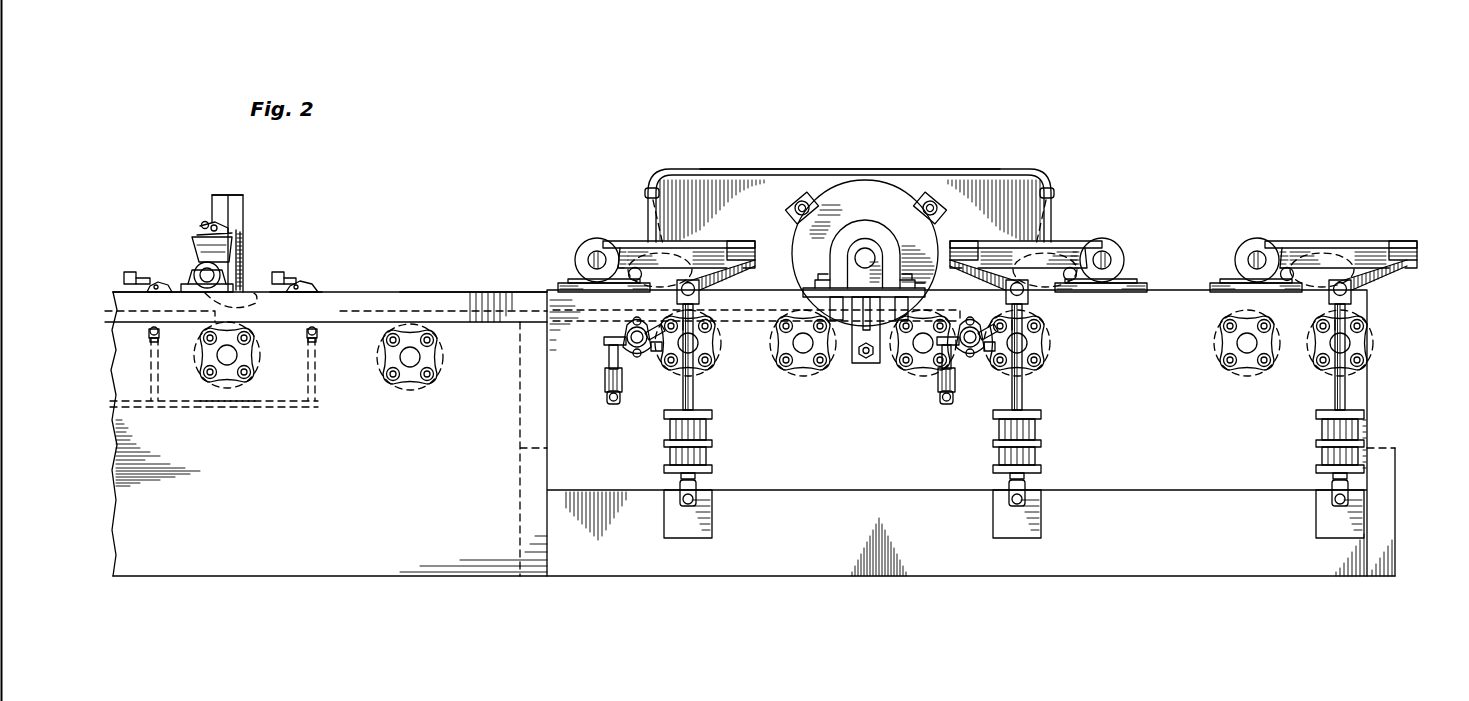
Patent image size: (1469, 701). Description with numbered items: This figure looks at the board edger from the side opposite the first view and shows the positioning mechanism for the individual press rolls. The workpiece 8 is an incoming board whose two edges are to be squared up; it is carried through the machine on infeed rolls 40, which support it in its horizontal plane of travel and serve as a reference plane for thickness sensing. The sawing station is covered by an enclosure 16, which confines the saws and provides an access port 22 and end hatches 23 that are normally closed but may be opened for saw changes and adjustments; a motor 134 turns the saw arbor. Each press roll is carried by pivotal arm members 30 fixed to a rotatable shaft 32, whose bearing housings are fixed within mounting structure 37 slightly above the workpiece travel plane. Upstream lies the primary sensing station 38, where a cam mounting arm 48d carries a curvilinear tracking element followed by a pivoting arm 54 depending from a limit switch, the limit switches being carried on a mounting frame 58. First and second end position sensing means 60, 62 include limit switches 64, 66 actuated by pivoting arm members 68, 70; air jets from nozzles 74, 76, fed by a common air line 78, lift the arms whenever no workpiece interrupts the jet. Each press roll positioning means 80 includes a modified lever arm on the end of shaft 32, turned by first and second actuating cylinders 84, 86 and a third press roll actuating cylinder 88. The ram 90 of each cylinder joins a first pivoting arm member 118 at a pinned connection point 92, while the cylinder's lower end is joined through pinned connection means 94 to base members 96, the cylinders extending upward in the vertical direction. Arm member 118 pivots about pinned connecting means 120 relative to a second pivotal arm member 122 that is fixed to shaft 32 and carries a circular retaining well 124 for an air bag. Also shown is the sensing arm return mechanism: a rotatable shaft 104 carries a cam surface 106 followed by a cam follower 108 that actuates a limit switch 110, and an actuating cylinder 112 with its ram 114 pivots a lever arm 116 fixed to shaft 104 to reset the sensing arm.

The workpiece 8 is at (149, 338).
The enclosure 16 is at (840, 169).
The access port 22 is at (937, 213).
The end hatches 23 is at (648, 202).
The pivotal arm members 30 is at (665, 166).
The rotatable shaft 32 is at (596, 260).
The mounting structure 37 is at (558, 287).
The primary sensing station 38 is at (288, 181).
The infeed rolls 40 is at (228, 392).
The cam mounting arm 48d is at (193, 250).
The pivoting arm 54 is at (211, 220).
The mounting frame 58 is at (238, 195).
The first end position sensing means 60 is at (136, 246).
The second end position sensing means 62 is at (342, 264).
The limit switch 64 is at (128, 272).
The limit switch 66 is at (283, 275).
The pivoting arm member 68 is at (160, 280).
The pivoting arm member 70 is at (315, 280).
The nozzle 74 is at (150, 345).
The nozzle 76 is at (318, 345).
The common air line 78 is at (264, 410).
The press roll positioning means 80 is at (724, 373).
The first actuating cylinder 84 is at (714, 427).
The second actuating cylinder 86 is at (1043, 427).
The third press roll actuating cylinder 88 is at (1315, 430).
The ram 90 is at (694, 388).
The pinned connection point 92 is at (702, 293).
The pinned connection means 94 is at (700, 500).
The base members 96 is at (714, 526).
The rotatable shaft 104 is at (623, 321).
The cam surface 106 is at (600, 284).
The cam follower 108 is at (658, 352).
The limit switch 110 is at (618, 399).
The actuating cylinder 112 is at (604, 379).
The ram 114 is at (607, 358).
The lever arm 116 is at (628, 334).
The first pivoting arm member 118 is at (700, 268).
The pinned connecting means 120 is at (634, 268).
The second pivotal arm member 122 is at (662, 243).
The retaining well 124 is at (752, 248).
The motor 134 is at (872, 222).